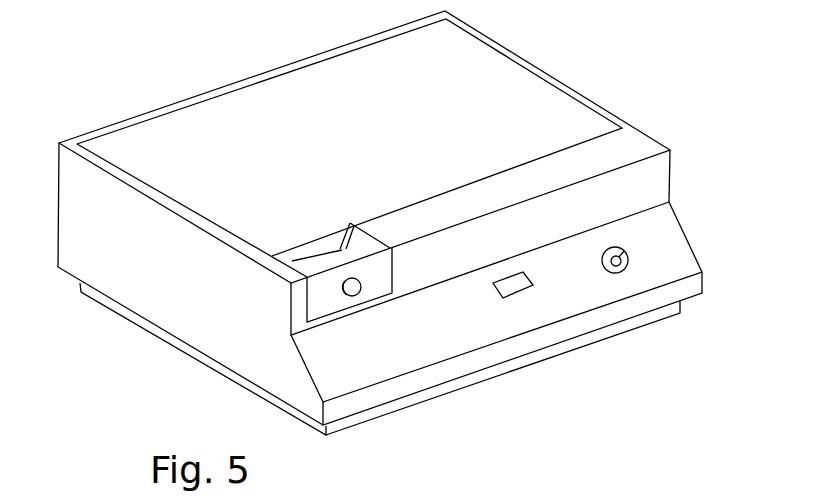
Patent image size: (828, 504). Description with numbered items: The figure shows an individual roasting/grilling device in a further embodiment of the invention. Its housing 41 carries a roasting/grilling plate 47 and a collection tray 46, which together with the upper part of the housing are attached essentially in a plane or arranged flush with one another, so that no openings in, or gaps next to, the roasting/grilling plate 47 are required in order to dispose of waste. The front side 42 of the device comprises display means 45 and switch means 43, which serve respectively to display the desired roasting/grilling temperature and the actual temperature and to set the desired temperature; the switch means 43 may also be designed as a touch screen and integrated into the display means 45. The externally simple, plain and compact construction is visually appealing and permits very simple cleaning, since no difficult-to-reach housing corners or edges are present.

The housing 41 is at (648, 177).
The front side 42 is at (440, 335).
The switch means 43 is at (625, 270).
The display means 45 is at (510, 285).
The collection tray 46 is at (330, 300).
The roasting/grilling plate 47 is at (498, 87).